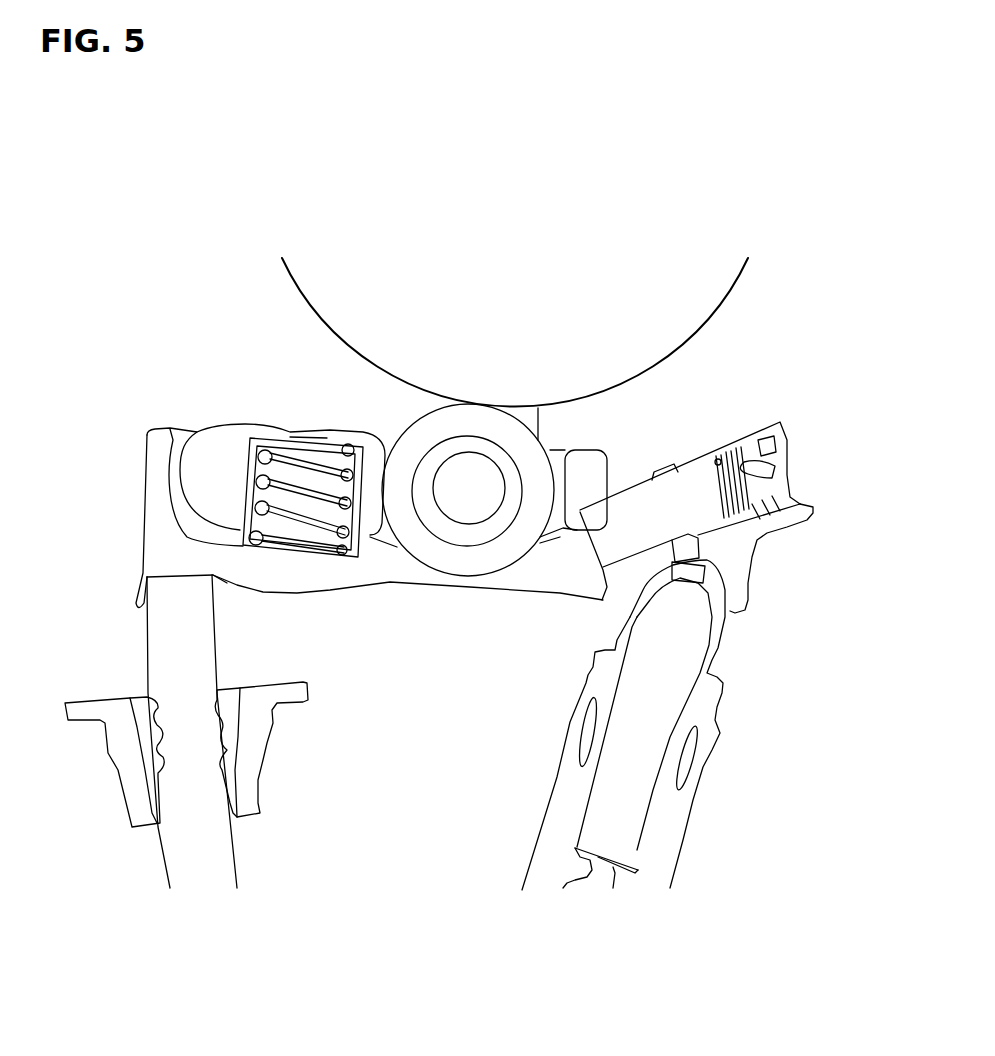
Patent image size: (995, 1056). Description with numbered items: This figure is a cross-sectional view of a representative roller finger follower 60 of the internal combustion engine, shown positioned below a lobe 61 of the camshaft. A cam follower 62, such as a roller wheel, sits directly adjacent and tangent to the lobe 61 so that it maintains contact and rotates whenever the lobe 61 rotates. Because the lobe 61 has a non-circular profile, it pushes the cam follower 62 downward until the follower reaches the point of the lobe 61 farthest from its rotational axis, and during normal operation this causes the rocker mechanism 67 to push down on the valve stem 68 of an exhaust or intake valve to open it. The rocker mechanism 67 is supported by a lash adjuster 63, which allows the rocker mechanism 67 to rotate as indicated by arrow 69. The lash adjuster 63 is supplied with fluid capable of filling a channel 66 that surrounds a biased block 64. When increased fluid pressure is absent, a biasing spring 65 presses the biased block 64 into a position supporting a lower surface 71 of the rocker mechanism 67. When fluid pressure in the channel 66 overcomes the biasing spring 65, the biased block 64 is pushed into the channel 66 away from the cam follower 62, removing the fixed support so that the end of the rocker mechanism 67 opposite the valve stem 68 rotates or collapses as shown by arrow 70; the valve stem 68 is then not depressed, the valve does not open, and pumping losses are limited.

The roller finger follower 60 is at (104, 312).
The lobe 61 is at (518, 334).
The cam follower 62 is at (443, 558).
The lash adjuster 63 is at (707, 693).
The biased block 64 is at (700, 473).
The biasing spring 65 is at (793, 503).
The channel 66 is at (660, 472).
The rocker mechanism 67 is at (238, 440).
The valve stem 68 is at (168, 652).
The arrow 69 is at (163, 397).
The arrow 70 is at (578, 480).
The lower surface 71 is at (597, 510).